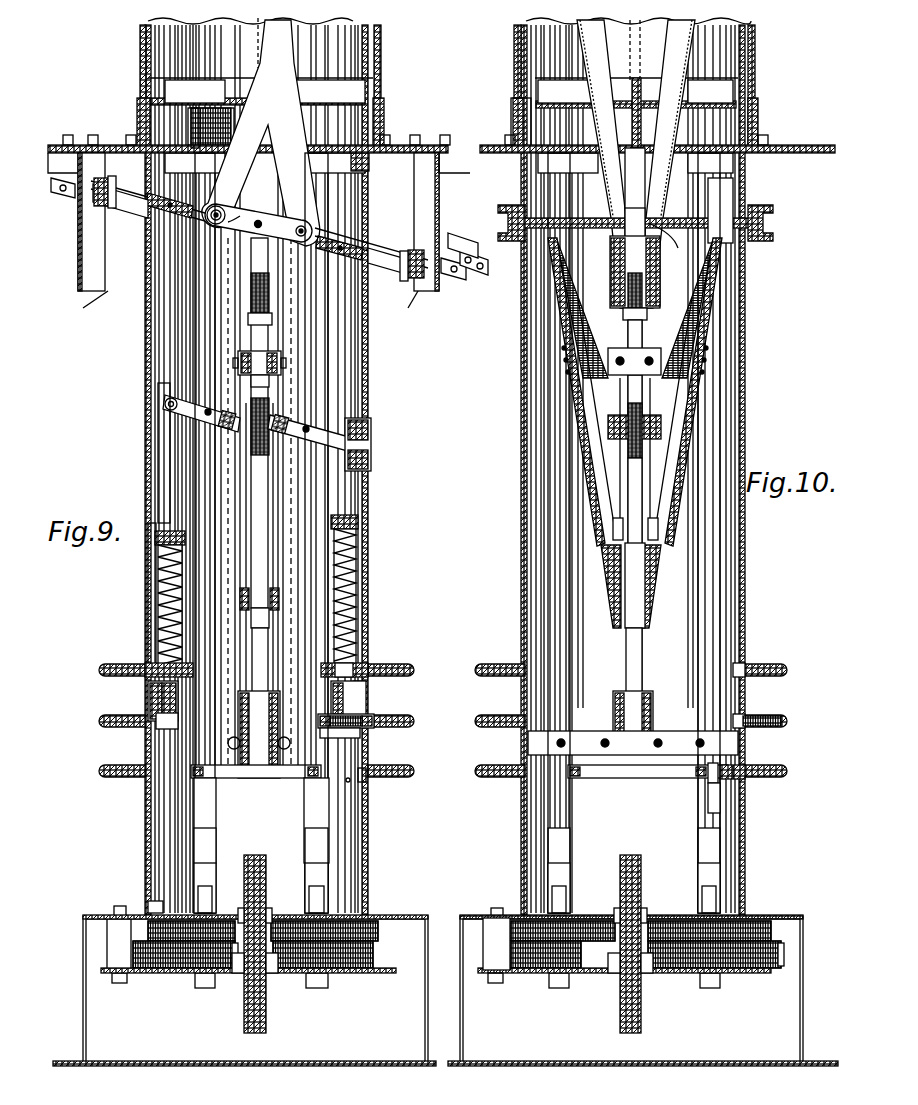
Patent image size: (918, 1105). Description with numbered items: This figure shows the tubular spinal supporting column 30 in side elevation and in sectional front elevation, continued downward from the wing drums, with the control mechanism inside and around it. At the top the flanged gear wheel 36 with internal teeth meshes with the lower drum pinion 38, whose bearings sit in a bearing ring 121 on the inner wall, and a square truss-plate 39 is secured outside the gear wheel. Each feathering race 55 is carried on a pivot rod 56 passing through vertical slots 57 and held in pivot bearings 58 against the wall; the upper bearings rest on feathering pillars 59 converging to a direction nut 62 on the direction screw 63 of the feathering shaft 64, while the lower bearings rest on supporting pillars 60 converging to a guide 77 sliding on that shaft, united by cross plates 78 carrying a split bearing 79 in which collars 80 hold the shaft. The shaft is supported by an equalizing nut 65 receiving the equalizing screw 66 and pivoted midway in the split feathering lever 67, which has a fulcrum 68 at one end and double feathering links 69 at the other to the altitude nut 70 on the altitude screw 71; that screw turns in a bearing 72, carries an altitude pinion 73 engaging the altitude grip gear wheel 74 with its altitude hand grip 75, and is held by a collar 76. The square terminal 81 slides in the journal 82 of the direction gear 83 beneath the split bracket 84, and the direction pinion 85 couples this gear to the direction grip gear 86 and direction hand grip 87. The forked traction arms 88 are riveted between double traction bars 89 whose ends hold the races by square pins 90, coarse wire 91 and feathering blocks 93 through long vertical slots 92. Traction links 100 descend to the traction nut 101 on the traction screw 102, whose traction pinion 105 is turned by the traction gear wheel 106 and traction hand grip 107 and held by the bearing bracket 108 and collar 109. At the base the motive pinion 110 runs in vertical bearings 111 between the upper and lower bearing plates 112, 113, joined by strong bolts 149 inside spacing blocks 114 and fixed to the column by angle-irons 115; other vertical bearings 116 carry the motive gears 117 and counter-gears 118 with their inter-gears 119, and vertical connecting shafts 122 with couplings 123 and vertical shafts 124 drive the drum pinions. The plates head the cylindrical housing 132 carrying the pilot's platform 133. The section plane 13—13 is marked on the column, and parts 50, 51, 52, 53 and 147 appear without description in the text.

In FIG. 9, the section line 13 is at (97, 660).
In FIG. 9, the spinal supporting column 30 is at (360, 383).
In FIG. 10, the spinal supporting column 30 is at (512, 366).
In FIG. 10, the flanged gear wheel 36 is at (502, 102).
In FIG. 9, the drum pinion 38 is at (129, 104).
In FIG. 10, the drum pinion 38 is at (750, 110).
In FIG. 10, the square truss-plate 39 is at (475, 137).
In FIG. 9, the bracket 50 is at (44, 140).
In FIG. 10, the bracket 50 is at (470, 270).
In FIG. 9, the bracket arm 51 is at (55, 186).
In FIG. 9, the side flange plate 52 is at (88, 280).
In FIG. 10, the side flange plate 52 is at (462, 187).
In FIG. 9, the sleeve 53 is at (100, 190).
In FIG. 9, the feathering race 55 is at (112, 172).
In FIG. 10, the feathering race 55 is at (765, 215).
In FIG. 9, the pivot rod 56 is at (223, 201).
In FIG. 10, the pivot rod 56 is at (737, 255).
In FIG. 10, the vertical slots 57 is at (540, 295).
In FIG. 10, the pivot bearings 58 is at (492, 226).
In FIG. 9, the feathering pillars 59 is at (245, 42).
In FIG. 10, the feathering pillars 59 is at (585, 30).
In FIG. 9, the supporting pillars 60 is at (255, 255).
In FIG. 10, the supporting pillars 60 is at (680, 300).
In FIG. 9, the direction nut 62 is at (262, 283).
In FIG. 10, the direction nut 62 is at (652, 272).
In FIG. 9, the direction screw 63 is at (267, 303).
In FIG. 10, the direction screw 63 is at (640, 306).
In FIG. 9, the feathering shaft 64 is at (258, 615).
In FIG. 10, the feathering shaft 64 is at (640, 612).
In FIG. 9, the equalizing nut 65 is at (243, 430).
In FIG. 10, the equalizing nut 65 is at (653, 420).
In FIG. 9, the equalizing screw 66 is at (243, 440).
In FIG. 10, the equalizing screw 66 is at (620, 436).
In FIG. 9, the split feathering lever 67 is at (160, 410).
In FIG. 9, the fulcrum 68 is at (363, 430).
In FIG. 9, the double feathering links 69 is at (155, 482).
In FIG. 9, the altitude nut 70 is at (147, 535).
In FIG. 9, the altitude screw 71 is at (140, 580).
In FIG. 9, the bearing 72 is at (150, 690).
In FIG. 9, the altitude pinion 73 is at (136, 650).
In FIG. 9, the altitude grip gear wheel 74 is at (357, 680).
In FIG. 10, the altitude grip gear wheel 74 is at (740, 666).
In FIG. 10, the altitude hand grip 75 is at (768, 662).
In FIG. 9, the collar 76 is at (148, 708).
In FIG. 9, the guide 77 is at (265, 592).
In FIG. 10, the guide 77 is at (655, 598).
In FIG. 10, the cross plates 78 is at (690, 320).
In FIG. 9, the split bearing 79 is at (228, 355).
In FIG. 10, the split bearing 79 is at (653, 352).
In FIG. 9, the collars 80 is at (250, 335).
In FIG. 10, the collars 80 is at (618, 328).
In FIG. 9, the terminal 81 is at (259, 638).
In FIG. 10, the terminal 81 is at (634, 640).
In FIG. 9, the journal 82 is at (150, 680).
In FIG. 9, the direction gear 83 is at (190, 765).
In FIG. 10, the direction gear 83 is at (600, 770).
In FIG. 9, the split bracket 84 is at (268, 722).
In FIG. 10, the split bracket 84 is at (655, 725).
In FIG. 10, the direction pinion 85 is at (690, 770).
In FIG. 9, the direction grip gear 86 is at (360, 769).
In FIG. 10, the direction grip gear 86 is at (738, 769).
In FIG. 9, the direction hand grip 87 is at (400, 765).
In FIG. 10, the direction hand grip 87 is at (773, 764).
In FIG. 9, the forked traction arms 88 is at (272, 105).
In FIG. 9, the traction bars 89 is at (265, 210).
In FIG. 10, the traction bars 89 is at (640, 230).
In FIG. 9, the square pins 90 is at (150, 205).
In FIG. 9, the coarse wire 91 is at (135, 200).
In FIG. 9, the long vertical slots 92 is at (140, 260).
In FIG. 10, the feathering blocks 93 is at (492, 210).
In FIG. 9, the traction links 100 is at (335, 32).
In FIG. 10, the traction links 100 is at (652, 22).
In FIG. 9, the traction nut 101 is at (350, 520).
In FIG. 9, the traction screw 102 is at (350, 568).
In FIG. 9, the traction pinion 105 is at (340, 730).
In FIG. 9, the traction gear wheel 106 is at (366, 720).
In FIG. 10, the traction gear wheel 106 is at (748, 722).
In FIG. 9, the traction hand grip 107 is at (366, 712).
In FIG. 10, the traction hand grip 107 is at (773, 713).
In FIG. 9, the bearing bracket 108 is at (345, 688).
In FIG. 9, the collar 109 is at (342, 660).
In FIG. 9, the motive pinion 110 is at (274, 964).
In FIG. 10, the motive pinion 110 is at (600, 965).
In FIG. 9, the vertical bearings 111 is at (258, 990).
In FIG. 10, the vertical bearings 111 is at (636, 900).
In FIG. 9, the upper bearing plate 112 is at (385, 908).
In FIG. 10, the upper bearing plate 112 is at (785, 908).
In FIG. 9, the lower bearing plate 113 is at (335, 965).
In FIG. 10, the lower bearing plate 113 is at (740, 965).
In FIG. 9, the spacing blocks 114 is at (310, 118).
In FIG. 10, the spacing blocks 114 is at (485, 945).
In FIG. 9, the angle-irons 115 is at (145, 898).
In FIG. 9, the vertical bearings 116 is at (160, 886).
In FIG. 10, the vertical bearings 116 is at (540, 896).
In FIG. 9, the motive gears 117 is at (170, 948).
In FIG. 10, the motive gears 117 is at (760, 947).
In FIG. 9, the counter-gears 118 is at (340, 932).
In FIG. 10, the counter-gears 118 is at (548, 950).
In FIG. 9, the inter-gears 119 is at (116, 906).
In FIG. 10, the inter-gears 119 is at (763, 923).
In FIG. 9, the bearing ring 121 is at (190, 82).
In FIG. 10, the bearing ring 121 is at (715, 82).
In FIG. 9, the vertical connecting shafts 122 is at (190, 790).
In FIG. 10, the vertical connecting shafts 122 is at (712, 815).
In FIG. 9, the couplings 123 is at (160, 305).
In FIG. 10, the couplings 123 is at (725, 180).
In FIG. 9, the vertical shafts 124 is at (318, 808).
In FIG. 10, the vertical shafts 124 is at (548, 790).
In FIG. 9, the cylindrical housing 132 is at (420, 999).
In FIG. 10, the cylindrical housing 132 is at (456, 1012).
In FIG. 9, the pilot's platform 133 is at (321, 1056).
In FIG. 10, the pilot's platform 133 is at (560, 1058).
In FIG. 9, the bearing 147 is at (183, 113).
In FIG. 9, the strong bolts 149 is at (110, 896).
In FIG. 10, the strong bolts 149 is at (490, 900).